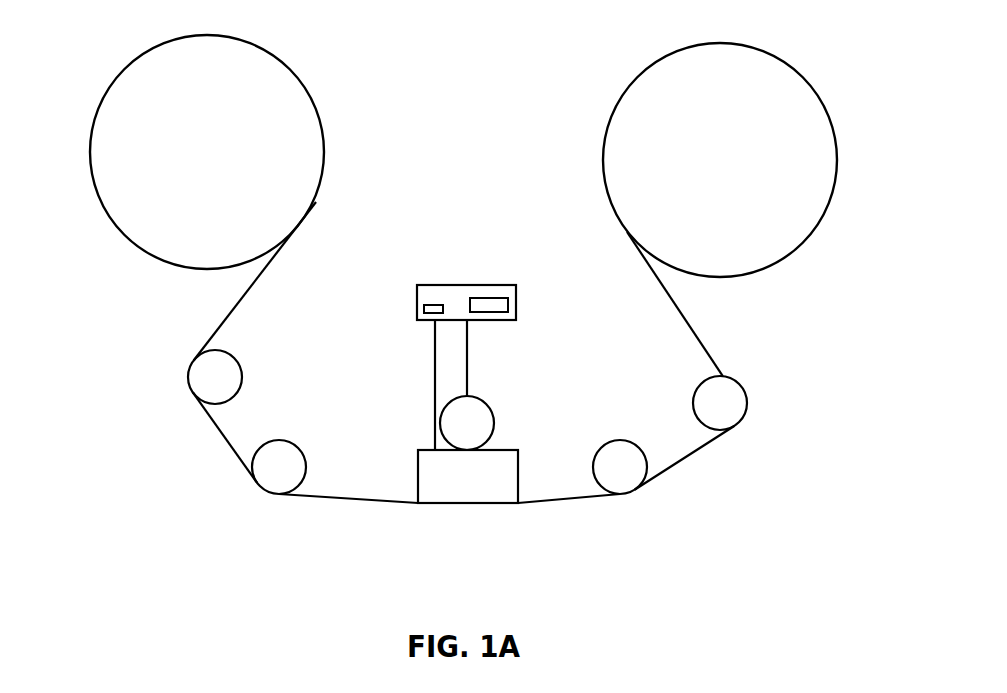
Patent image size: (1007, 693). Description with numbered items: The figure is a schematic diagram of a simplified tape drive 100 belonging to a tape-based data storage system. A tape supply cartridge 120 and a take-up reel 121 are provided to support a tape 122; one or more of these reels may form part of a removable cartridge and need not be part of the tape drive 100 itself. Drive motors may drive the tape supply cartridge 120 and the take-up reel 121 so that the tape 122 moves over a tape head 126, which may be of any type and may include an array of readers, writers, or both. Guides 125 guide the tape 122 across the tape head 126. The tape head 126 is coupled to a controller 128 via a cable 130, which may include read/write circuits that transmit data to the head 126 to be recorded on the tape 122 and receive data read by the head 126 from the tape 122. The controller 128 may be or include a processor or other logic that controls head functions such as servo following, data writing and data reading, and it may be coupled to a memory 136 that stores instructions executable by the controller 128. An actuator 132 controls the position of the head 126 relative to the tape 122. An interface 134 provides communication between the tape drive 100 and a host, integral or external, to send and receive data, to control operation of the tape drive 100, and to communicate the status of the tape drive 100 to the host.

The tape drive 100 is at (167, 313).
The tape supply cartridge 120 is at (322, 127).
The take-up reel 121 is at (792, 253).
The tape 122 is at (351, 502).
The guides 125 is at (279, 440).
The tape head 126 is at (520, 478).
The controller 128 is at (465, 285).
The cable 130 is at (436, 420).
The actuator 132 is at (486, 403).
The interface 134 is at (502, 285).
The memory 136 is at (433, 305).